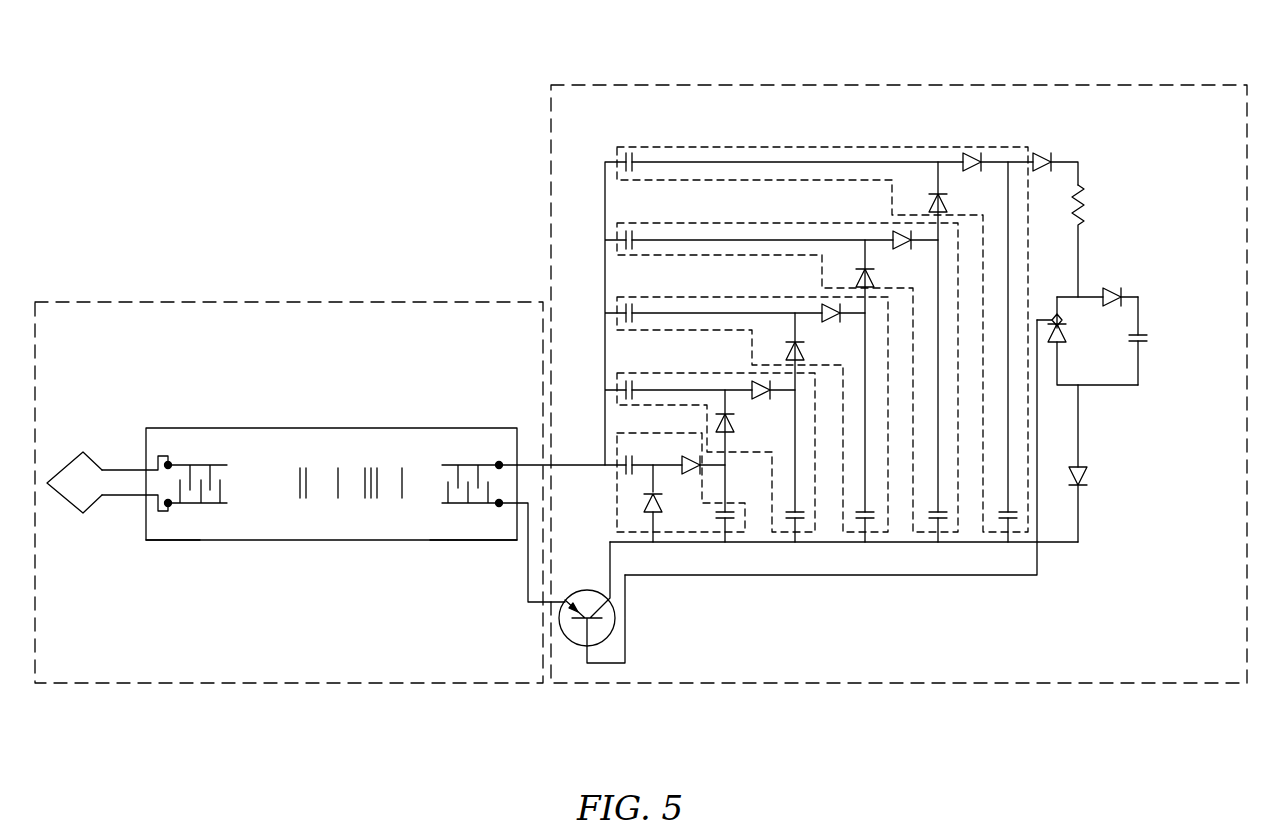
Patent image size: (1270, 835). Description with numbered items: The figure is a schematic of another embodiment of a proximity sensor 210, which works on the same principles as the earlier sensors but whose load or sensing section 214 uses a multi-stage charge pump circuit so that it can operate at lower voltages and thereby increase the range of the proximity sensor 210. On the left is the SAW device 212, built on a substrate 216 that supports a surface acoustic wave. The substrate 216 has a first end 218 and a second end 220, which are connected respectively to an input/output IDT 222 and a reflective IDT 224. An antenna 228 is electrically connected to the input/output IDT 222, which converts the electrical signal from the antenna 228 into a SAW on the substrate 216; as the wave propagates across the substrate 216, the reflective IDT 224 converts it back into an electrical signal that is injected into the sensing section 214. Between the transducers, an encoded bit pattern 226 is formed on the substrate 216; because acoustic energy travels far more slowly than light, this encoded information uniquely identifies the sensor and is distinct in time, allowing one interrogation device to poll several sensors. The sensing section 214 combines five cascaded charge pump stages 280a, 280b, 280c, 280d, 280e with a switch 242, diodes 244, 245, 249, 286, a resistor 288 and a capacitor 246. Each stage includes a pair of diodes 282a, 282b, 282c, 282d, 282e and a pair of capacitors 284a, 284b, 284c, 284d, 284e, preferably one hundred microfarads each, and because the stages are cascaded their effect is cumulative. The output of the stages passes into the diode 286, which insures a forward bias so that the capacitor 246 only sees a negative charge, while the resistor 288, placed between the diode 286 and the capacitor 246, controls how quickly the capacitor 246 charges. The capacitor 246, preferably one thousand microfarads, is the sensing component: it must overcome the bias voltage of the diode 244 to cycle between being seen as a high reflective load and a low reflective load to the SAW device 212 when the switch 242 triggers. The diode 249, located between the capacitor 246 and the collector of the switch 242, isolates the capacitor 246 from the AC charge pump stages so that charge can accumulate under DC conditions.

The proximity sensor 210 is at (466, 177).
The SAW device 212 is at (270, 685).
The sensing section 214 is at (1077, 85).
The substrate 216 is at (305, 442).
The first end 218 is at (153, 528).
The second end 220 is at (475, 530).
The input/output IDT 222 is at (200, 463).
The reflective IDT 224 is at (463, 462).
The encoded bit pattern 226 is at (297, 495).
The antenna 228 is at (67, 512).
The switch 242 is at (607, 632).
The diode 244 is at (1062, 332).
The diode 245 is at (1122, 294).
The capacitor 246 is at (1141, 343).
The diode 249 is at (1087, 476).
The charge pump stage 280a is at (690, 535).
The charge pump stage 280b is at (783, 542).
The charge pump stage 280c is at (688, 297).
The charge pump stage 280d is at (732, 222).
The charge pump stage 280e is at (701, 146).
The pair of diodes 282a is at (643, 505).
The pair of diodes 282b is at (723, 414).
The pair of diodes 282c is at (794, 340).
The pair of diodes 282d is at (865, 267).
The pair of diodes 282e is at (935, 192).
The pair of capacitors 284a is at (616, 463).
The pair of capacitors 284b is at (616, 388).
The pair of capacitors 284c is at (616, 311).
The pair of capacitors 284d is at (616, 236).
The pair of capacitors 284e is at (622, 155).
The diode 286 is at (1062, 160).
The resistor 288 is at (1086, 207).